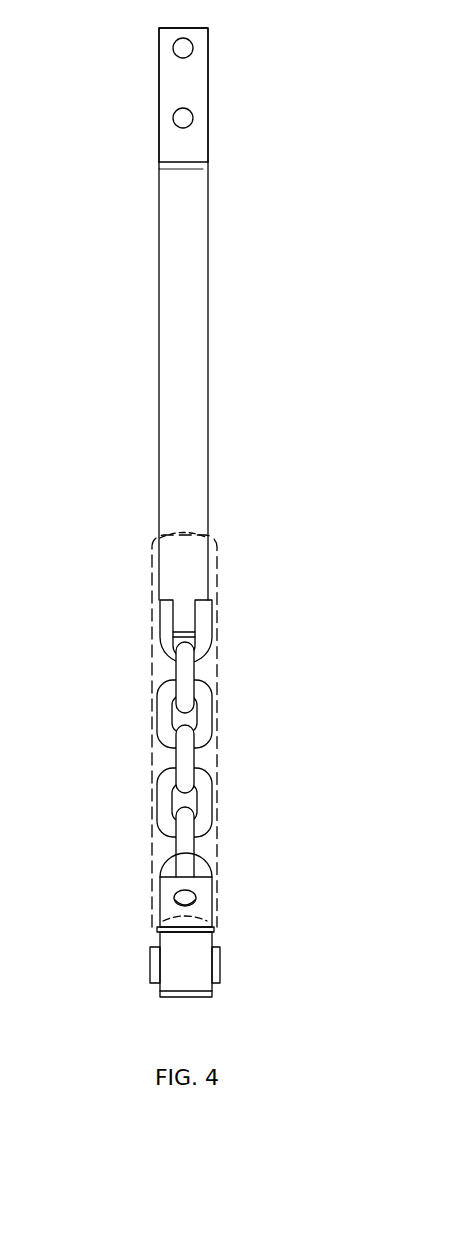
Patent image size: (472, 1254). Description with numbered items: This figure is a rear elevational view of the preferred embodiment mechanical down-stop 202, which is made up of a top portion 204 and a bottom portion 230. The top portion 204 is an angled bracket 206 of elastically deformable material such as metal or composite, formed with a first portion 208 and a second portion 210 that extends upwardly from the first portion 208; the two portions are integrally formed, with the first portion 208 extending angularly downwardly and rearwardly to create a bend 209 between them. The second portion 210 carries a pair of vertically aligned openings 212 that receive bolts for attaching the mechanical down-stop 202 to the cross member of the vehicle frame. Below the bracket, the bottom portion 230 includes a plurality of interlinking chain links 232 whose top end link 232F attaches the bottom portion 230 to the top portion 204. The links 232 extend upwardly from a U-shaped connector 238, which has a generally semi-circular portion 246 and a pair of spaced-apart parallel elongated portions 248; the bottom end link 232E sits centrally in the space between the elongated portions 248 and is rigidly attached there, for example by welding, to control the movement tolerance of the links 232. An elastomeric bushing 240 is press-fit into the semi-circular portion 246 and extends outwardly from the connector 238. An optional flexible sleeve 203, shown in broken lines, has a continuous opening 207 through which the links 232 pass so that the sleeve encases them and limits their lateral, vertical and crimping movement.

The mechanical down-stop 202 is at (117, 68).
The flexible sleeve 203 is at (222, 570).
The top portion 204 is at (130, 237).
The angled bracket 206 is at (158, 382).
The continuous opening 207 is at (202, 541).
The first portion 208 is at (208, 341).
The bend 209 is at (203, 166).
The second portion 210 is at (208, 86).
The vertically aligned openings 212 is at (186, 52).
The bottom portion 230 is at (229, 759).
The chain links 232 is at (170, 765).
The bottom end link 232E is at (198, 858).
The top end link 232F is at (200, 628).
The U-shaped connector 238 is at (222, 882).
The elastomeric bushing 240 is at (220, 953).
The semi-circular portion 246 is at (188, 997).
The elongated portions 248 is at (160, 902).